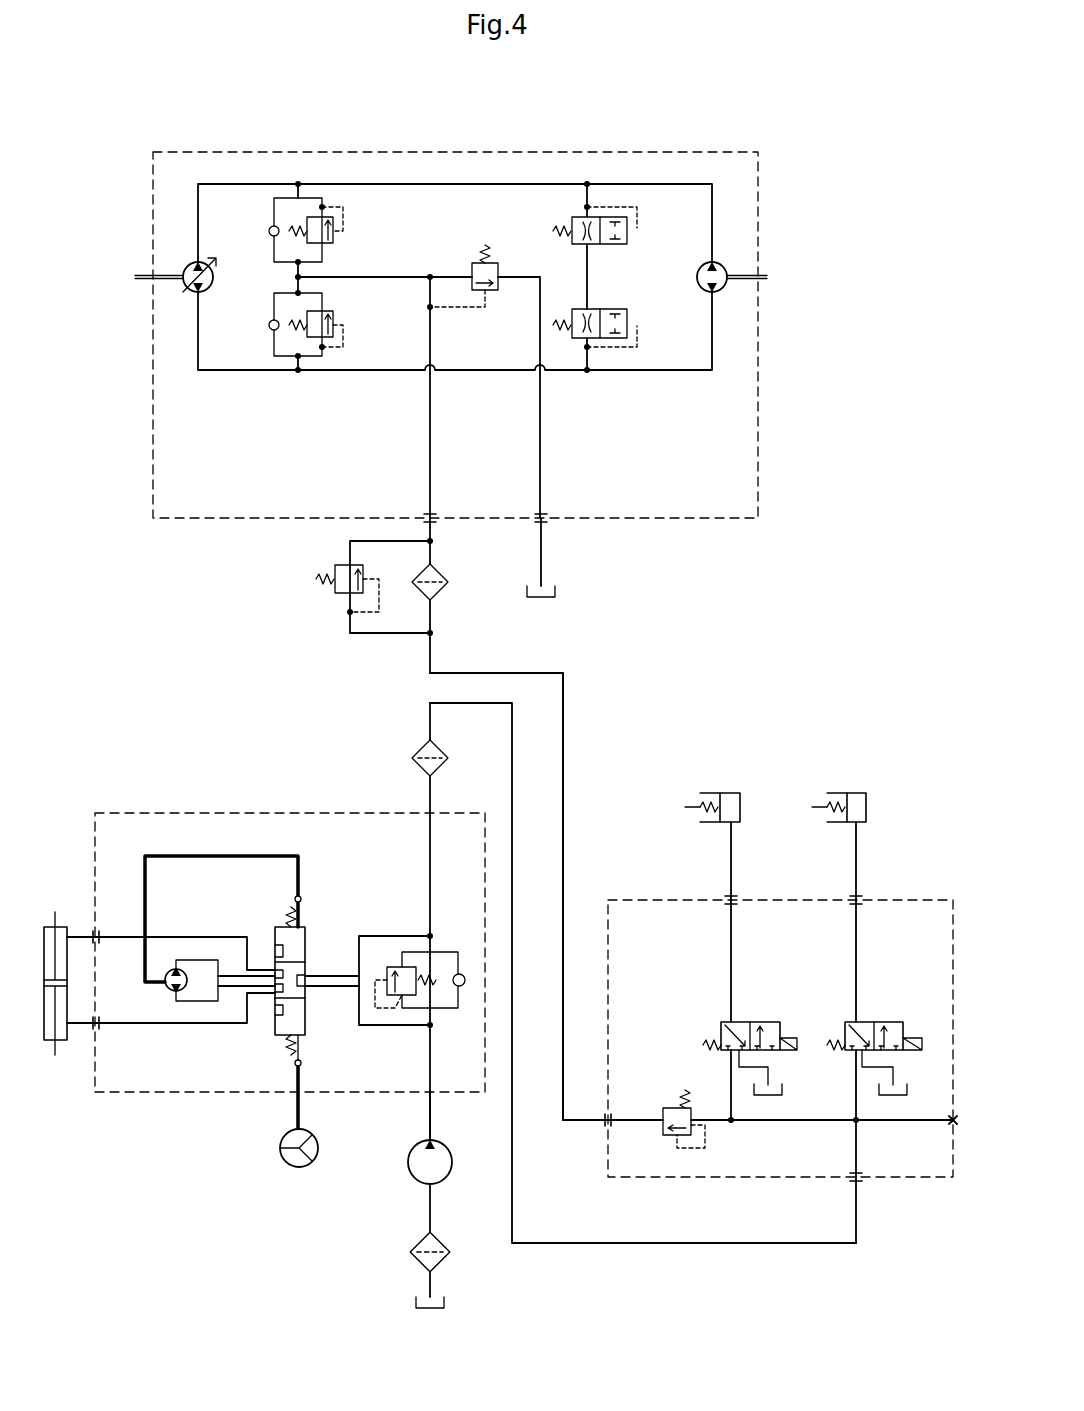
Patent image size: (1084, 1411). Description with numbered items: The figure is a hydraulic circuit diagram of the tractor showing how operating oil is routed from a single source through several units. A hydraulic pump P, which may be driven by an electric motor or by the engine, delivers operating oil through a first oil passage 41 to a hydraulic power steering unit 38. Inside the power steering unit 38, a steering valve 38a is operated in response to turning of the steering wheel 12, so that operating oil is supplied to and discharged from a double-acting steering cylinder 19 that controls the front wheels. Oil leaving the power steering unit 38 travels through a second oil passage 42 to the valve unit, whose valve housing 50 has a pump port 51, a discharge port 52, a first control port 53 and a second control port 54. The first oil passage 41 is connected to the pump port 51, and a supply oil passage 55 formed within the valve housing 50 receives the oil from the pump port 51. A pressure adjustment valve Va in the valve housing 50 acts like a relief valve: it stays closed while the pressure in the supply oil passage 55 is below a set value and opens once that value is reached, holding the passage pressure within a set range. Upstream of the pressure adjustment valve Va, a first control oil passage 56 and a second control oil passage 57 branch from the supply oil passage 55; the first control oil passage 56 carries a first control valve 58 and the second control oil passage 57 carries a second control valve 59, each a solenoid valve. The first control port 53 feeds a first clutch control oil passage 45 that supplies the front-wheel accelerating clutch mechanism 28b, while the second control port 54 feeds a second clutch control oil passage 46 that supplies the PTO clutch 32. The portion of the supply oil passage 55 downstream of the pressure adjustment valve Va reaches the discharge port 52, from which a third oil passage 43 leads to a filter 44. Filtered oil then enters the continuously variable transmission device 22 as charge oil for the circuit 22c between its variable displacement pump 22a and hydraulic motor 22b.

The continuously variable transmission device 22 is at (672, 152).
The variable displacement pump 22a is at (200, 262).
The hydraulic motor 22b is at (697, 280).
The circuit 22c is at (450, 184).
The filter 44 is at (440, 592).
The third oil passage 43 is at (566, 785).
The second oil passage 42 is at (655, 1246).
The power steering unit 38 is at (228, 813).
The steering valve 38a is at (306, 935).
The steering cylinder 19 is at (63, 927).
The steering wheel 12 is at (291, 1166).
The first oil passage 41 is at (428, 1110).
The hydraulic pump P is at (410, 1170).
The PTO clutch 32 is at (729, 793).
The front-wheel accelerating clutch mechanism 28b is at (856, 793).
The valve housing 50 is at (620, 900).
The second clutch control oil passage 46 is at (735, 860).
The first clutch control oil passage 45 is at (860, 860).
The second control port 54 is at (728, 905).
The first control port 53 is at (858, 905).
The second control oil passage 57 is at (734, 957).
The first control oil passage 56 is at (853, 958).
The second control valve 59 is at (720, 1035).
The first control valve 58 is at (865, 1030).
The pressure adjustment valve Va is at (663, 1112).
The supply oil passage 55 is at (772, 1125).
The discharge port 52 is at (605, 1125).
The pump port 51 is at (858, 1180).